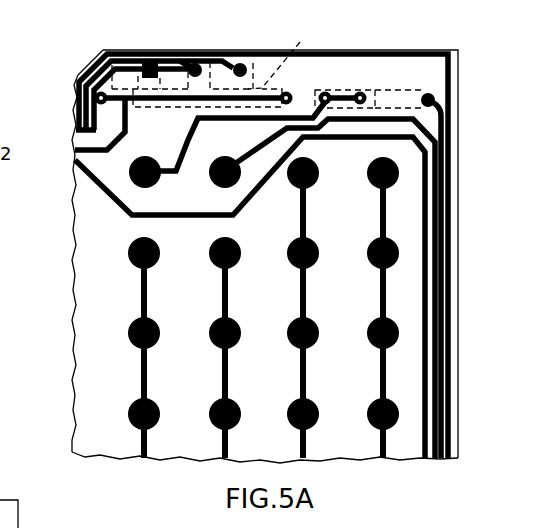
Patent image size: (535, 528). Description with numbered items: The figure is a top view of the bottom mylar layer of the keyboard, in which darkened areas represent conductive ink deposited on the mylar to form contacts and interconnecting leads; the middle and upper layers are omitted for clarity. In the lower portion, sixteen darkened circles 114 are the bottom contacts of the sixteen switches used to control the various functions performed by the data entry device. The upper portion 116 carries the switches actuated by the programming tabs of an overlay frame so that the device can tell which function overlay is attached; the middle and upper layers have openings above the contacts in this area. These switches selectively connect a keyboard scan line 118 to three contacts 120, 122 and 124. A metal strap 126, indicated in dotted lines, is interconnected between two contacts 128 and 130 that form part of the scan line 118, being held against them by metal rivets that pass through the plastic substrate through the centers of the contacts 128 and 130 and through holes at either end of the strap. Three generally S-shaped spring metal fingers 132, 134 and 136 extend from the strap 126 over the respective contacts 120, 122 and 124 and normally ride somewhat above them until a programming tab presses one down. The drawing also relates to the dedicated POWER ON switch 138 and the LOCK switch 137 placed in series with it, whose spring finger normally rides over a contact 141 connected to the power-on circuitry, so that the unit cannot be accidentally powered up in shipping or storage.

The darkened circles 114 is at (469, 152).
The portion carrying the switches actuable by the programming tabs 116 is at (64, 101).
The keyboard scan line 118 is at (128, 120).
The contact 120 is at (143, 66).
The contact 122 is at (197, 63).
The contact 124 is at (248, 63).
The metal strap 126 is at (319, 78).
The contact 128 is at (345, 84).
The contact 130 is at (80, 72).
The spring metal finger 132 is at (163, 60).
The spring metal finger 134 is at (212, 48).
The spring metal finger 136 is at (300, 42).
The LOCK switch 137 is at (389, 68).
The POWER ON switch 138 is at (160, 184).
The contact 141 is at (432, 94).